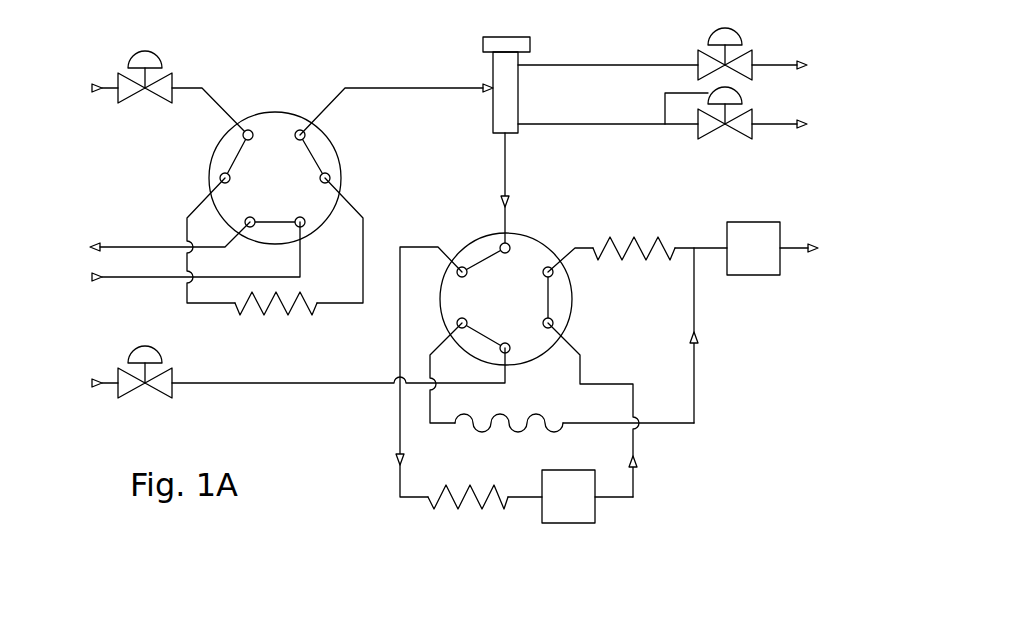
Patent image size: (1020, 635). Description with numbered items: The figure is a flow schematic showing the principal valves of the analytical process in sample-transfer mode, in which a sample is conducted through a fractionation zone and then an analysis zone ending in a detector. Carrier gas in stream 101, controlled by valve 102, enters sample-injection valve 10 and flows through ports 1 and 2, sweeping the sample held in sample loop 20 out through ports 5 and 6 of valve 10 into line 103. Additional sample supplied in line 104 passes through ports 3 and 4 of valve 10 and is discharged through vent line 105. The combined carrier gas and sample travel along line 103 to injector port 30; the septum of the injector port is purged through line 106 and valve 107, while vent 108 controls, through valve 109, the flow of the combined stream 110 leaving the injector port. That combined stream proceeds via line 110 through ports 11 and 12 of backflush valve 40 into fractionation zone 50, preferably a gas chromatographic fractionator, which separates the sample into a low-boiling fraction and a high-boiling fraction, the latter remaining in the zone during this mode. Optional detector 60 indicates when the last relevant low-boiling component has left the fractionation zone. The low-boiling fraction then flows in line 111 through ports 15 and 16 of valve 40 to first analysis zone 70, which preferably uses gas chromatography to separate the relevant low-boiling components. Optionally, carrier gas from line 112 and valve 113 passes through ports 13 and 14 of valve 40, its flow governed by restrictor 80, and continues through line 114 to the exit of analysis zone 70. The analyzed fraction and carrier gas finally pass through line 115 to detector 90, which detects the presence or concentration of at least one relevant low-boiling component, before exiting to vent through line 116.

The sample-injection valve 10 is at (277, 166).
The port 1 of sample-injection valve 1 is at (253, 136).
The port 2 of sample-injection valve 2 is at (230, 180).
The port 3 of sample-injection valve 3 is at (250, 214).
The port 4 of sample-injection valve 4 is at (300, 214).
The port 5 of sample-injection valve 5 is at (319, 180).
The port 6 of sample-injection valve 6 is at (294, 136).
The sample loop 20 is at (297, 315).
The injector port 30 is at (483, 45).
The backflush valve 40 is at (502, 281).
The port 11 of backflush valve 11 is at (505, 257).
The port 12 of backflush valve 12 is at (472, 277).
The port 13 of backflush valve 13 is at (471, 316).
The port 14 of backflush valve 14 is at (505, 340).
The port 15 of backflush valve 15 is at (537, 322).
The port 16 of backflush valve 16 is at (537, 277).
The fractionation zone 50 is at (488, 508).
The detector 60 is at (597, 510).
The first analysis zone 70 is at (618, 240).
The restrictor 80 is at (508, 434).
The detector 90 is at (771, 275).
The carrier gas stream 101 is at (79, 88).
The valve 102 is at (163, 60).
The line 103 is at (398, 88).
The line 104 is at (170, 256).
The line 105 is at (145, 241).
The line 106 is at (688, 66).
The valve 107 is at (752, 55).
The vent 108 is at (688, 115).
The valve 109 is at (752, 136).
The line 110 is at (508, 163).
The line 111 is at (604, 386).
The line 112 is at (272, 371).
The valve 113 is at (163, 355).
The line 114 is at (695, 377).
The line 115 is at (706, 246).
The line 116 is at (820, 253).